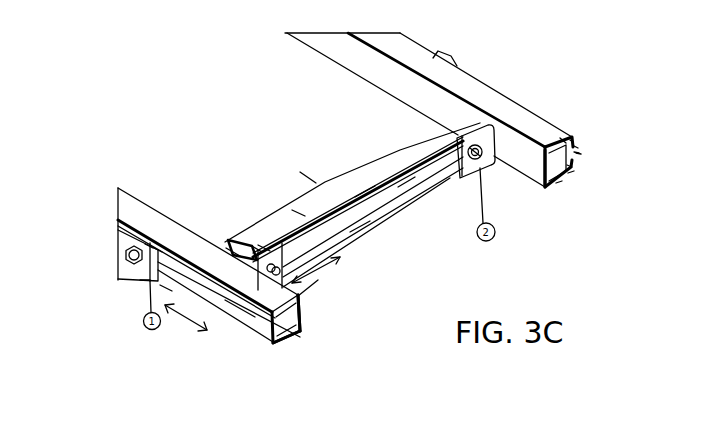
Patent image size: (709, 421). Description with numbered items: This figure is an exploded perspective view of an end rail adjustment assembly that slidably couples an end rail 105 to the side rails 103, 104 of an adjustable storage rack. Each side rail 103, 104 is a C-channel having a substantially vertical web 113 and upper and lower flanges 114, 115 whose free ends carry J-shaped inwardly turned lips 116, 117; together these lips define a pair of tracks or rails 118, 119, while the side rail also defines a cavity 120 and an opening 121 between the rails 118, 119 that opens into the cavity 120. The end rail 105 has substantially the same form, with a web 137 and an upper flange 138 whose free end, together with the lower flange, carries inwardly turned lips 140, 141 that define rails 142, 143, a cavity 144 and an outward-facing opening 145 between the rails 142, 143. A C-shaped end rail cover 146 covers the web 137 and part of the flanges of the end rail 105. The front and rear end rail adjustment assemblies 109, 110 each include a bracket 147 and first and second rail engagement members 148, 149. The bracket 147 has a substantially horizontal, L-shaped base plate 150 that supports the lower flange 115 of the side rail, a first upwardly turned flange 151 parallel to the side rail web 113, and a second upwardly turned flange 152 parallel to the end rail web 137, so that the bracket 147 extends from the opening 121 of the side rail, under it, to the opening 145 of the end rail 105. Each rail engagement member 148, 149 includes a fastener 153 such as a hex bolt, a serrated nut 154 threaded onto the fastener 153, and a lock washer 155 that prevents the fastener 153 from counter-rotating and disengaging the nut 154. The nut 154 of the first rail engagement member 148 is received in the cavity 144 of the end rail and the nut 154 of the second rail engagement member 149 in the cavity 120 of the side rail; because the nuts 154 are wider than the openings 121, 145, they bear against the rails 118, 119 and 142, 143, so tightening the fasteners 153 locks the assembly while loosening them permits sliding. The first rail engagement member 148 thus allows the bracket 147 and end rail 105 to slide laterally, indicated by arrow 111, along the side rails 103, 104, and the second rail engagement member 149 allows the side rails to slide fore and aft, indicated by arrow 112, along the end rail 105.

The forward side rail 103 is at (240, 318).
The rear side rail 104 is at (545, 124).
The end rail 105 is at (298, 213).
The front end rail adjustment assembly 109 is at (258, 247).
The rear end rail adjustment assembly 110 is at (491, 133).
The arrow (lateral sliding direction) 111 is at (183, 314).
The arrow (fore and aft sliding direction) 112 is at (318, 280).
The web 113 is at (542, 190).
The upper flange 114 is at (563, 140).
The lower flange 115 is at (560, 182).
The inwardly turned lip 116 is at (572, 142).
The inwardly turned lip 117 is at (571, 166).
The track or rail 118 is at (577, 147).
The track or rail 119 is at (580, 153).
The cavity 120 is at (573, 173).
The opening 121 is at (578, 152).
The web 137 is at (228, 250).
The upper flange 138 is at (235, 246).
The inwardly turned lip 140 is at (328, 228).
The inwardly turned lip 141 is at (360, 225).
The rail 142 is at (363, 193).
The rail 143 is at (421, 140).
The cavity 144 is at (308, 175).
The opening 145 is at (421, 140).
The end rail cover 146 is at (265, 247).
The bracket 147 is at (135, 246).
The first rail engagement member 148 is at (126, 263).
The second rail engagement member 149 is at (298, 330).
The base plate 150 is at (165, 288).
The first upwardly turned flange 151 is at (150, 244).
The second upwardly turned flange 152 is at (267, 240).
The fastener 153 is at (282, 333).
The nut 154 is at (158, 250).
The lock washer 155 is at (143, 278).